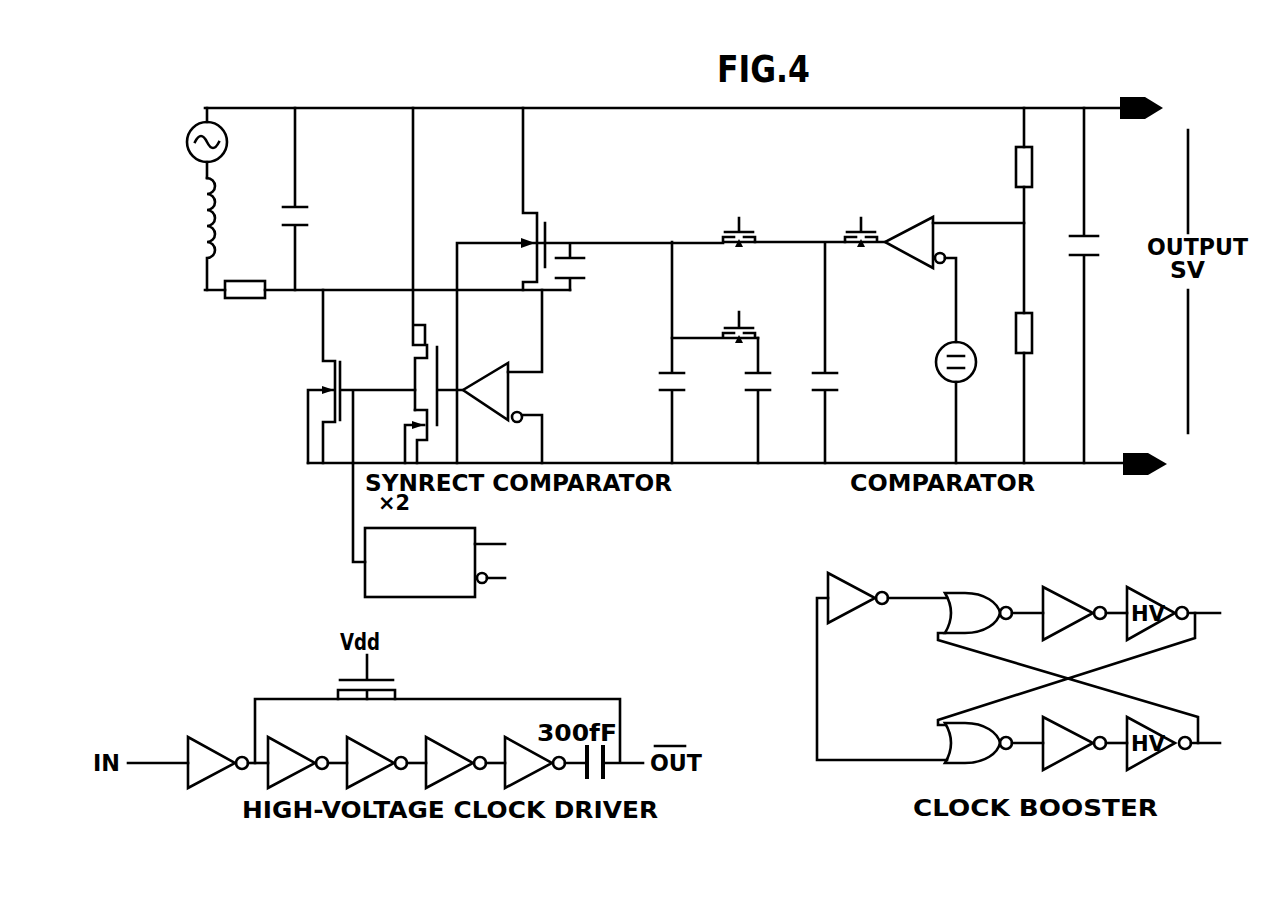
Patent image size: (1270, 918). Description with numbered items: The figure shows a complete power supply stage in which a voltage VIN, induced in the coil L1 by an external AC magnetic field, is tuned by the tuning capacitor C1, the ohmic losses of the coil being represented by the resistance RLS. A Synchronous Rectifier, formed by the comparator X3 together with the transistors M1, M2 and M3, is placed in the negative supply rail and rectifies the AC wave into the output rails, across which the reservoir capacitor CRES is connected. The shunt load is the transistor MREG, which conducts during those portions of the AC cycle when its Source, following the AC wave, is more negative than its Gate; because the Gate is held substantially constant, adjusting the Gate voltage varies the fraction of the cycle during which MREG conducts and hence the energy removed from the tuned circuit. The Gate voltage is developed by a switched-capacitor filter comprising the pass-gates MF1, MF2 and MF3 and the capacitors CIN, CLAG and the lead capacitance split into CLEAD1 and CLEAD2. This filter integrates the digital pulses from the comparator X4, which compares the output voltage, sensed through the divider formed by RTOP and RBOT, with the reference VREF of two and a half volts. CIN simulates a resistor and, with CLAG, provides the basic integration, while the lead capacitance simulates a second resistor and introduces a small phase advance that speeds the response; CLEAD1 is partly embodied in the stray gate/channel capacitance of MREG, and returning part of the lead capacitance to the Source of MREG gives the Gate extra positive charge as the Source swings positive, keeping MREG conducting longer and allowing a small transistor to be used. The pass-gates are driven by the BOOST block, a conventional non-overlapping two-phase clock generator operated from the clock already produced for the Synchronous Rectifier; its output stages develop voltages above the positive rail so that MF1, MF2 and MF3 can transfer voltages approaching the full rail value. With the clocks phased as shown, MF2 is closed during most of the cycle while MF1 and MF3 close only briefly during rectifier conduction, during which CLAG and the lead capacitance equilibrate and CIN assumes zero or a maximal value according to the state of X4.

The induced voltage VIN is at (152, 143).
The coil L1 is at (160, 234).
The loss resistance RLS is at (242, 313).
The tuning capacitor C1 is at (266, 199).
The synchronous rectifier transistor M1 is at (349, 376).
The synchronous rectifier transistor M2 is at (429, 438).
The synchronous rectifier transistor M3 is at (416, 266).
The shunt load transistor MREG is at (497, 285).
The synchronous rectifier comparator X3 is at (502, 356).
The first lead capacitor part CLEAD1 is at (634, 296).
The second lead capacitor part CLEAD2 is at (586, 406).
The pass-gate MF2 is at (730, 235).
The pass-gate MF3 is at (718, 325).
The lag capacitor CLAG is at (715, 352).
The input capacitor CIN is at (800, 352).
The pass-gate MF1 is at (857, 235).
The comparator X4 is at (954, 279).
The reference voltage VREF is at (921, 397).
The top divider resistor RTOP is at (985, 210).
The bottom divider resistor RBOT is at (996, 376).
The reservoir capacitor CRES is at (1110, 285).
The BOOST block BOOST is at (455, 530).